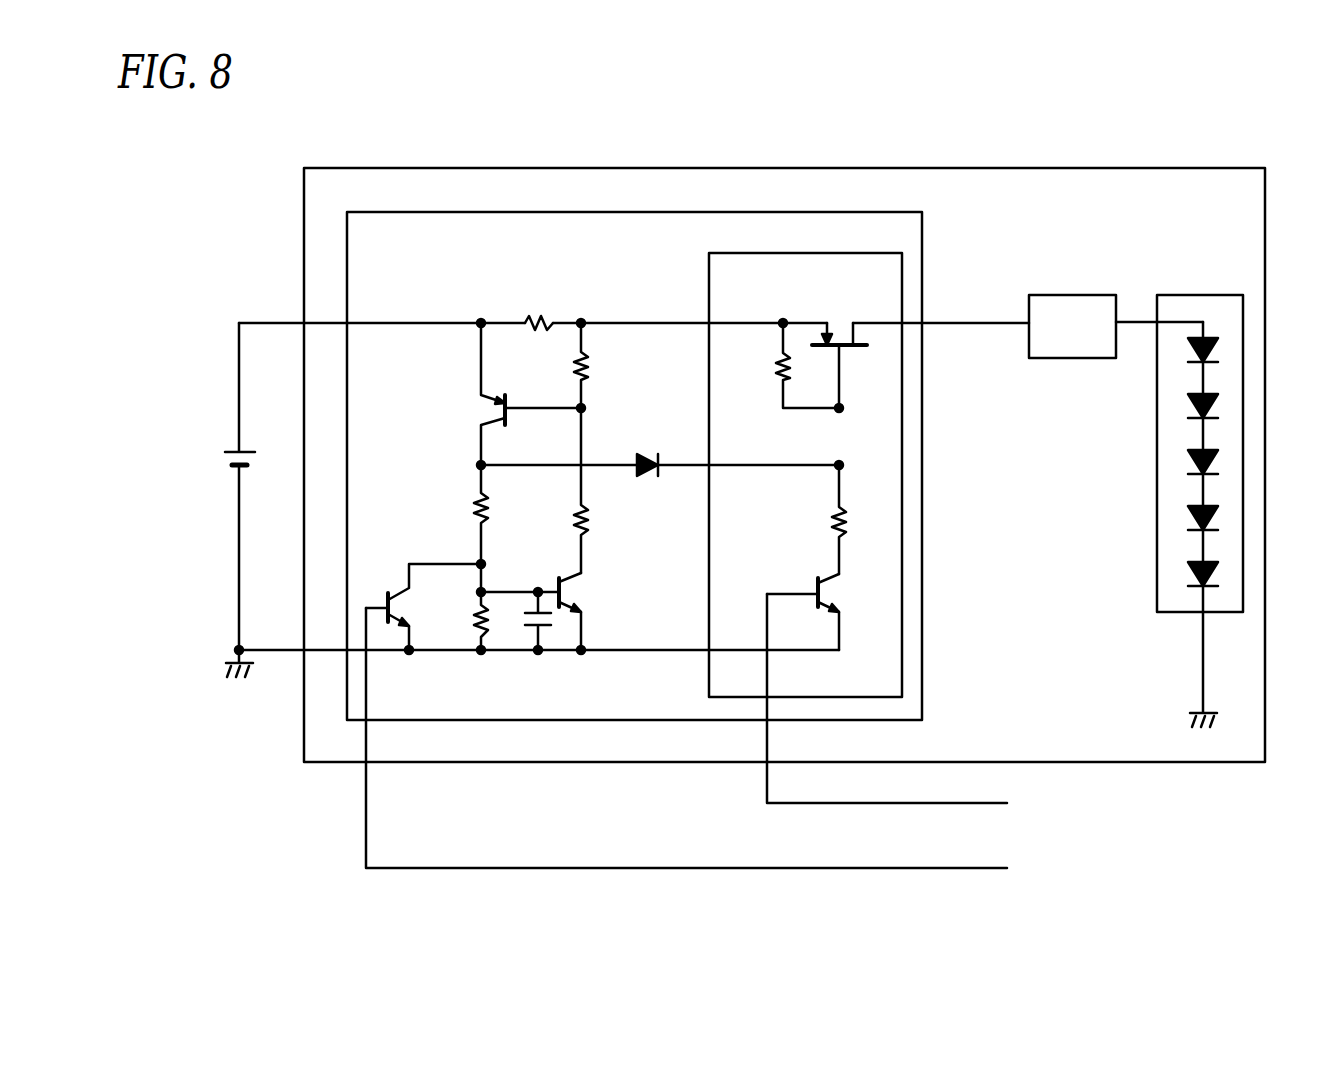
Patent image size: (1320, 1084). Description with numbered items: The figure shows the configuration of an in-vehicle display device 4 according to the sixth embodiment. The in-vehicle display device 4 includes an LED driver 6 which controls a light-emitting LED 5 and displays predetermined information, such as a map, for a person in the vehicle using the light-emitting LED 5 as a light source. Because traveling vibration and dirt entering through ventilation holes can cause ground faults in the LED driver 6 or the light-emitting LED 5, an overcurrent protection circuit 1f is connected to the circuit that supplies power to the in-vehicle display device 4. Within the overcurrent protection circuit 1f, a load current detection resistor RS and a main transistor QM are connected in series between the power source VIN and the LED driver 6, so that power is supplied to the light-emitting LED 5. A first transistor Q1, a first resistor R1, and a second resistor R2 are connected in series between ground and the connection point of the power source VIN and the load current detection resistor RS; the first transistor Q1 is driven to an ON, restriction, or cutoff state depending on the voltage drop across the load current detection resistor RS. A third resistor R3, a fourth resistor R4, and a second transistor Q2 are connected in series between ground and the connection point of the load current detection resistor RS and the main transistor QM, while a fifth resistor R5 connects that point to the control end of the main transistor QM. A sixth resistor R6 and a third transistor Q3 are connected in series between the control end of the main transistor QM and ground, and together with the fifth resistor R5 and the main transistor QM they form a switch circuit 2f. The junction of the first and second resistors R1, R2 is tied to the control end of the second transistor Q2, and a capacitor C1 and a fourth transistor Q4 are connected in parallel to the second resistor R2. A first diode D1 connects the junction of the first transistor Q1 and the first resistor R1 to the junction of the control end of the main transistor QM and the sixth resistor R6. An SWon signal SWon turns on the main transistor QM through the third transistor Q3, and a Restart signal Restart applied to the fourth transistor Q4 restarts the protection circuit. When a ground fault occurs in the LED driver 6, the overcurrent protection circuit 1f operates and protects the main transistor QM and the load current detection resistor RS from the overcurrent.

The in-vehicle display device 4 is at (784, 449).
The overcurrent protection circuit 1f is at (634, 451).
The switch circuit 2f is at (805, 460).
The light-emitting LED 5 is at (1200, 495).
The LED driver 6 is at (1072, 310).
The power source VIN is at (207, 500).
The load current detection resistor RS is at (531, 305).
The first resistor R1 is at (463, 516).
The second resistor R2 is at (462, 609).
The third resistor R3 is at (563, 367).
The fourth resistor R4 is at (603, 490).
The fifth resistor R5 is at (785, 365).
The sixth resistor R6 is at (860, 519).
The first transistor Q1 is at (505, 396).
The second transistor Q2 is at (596, 613).
The third transistor Q3 is at (828, 612).
The fourth transistor Q4 is at (423, 604).
The main transistor QM is at (839, 339).
The capacitor C1 is at (520, 621).
The first diode D1 is at (662, 482).
The SWon signal SWon is at (924, 706).
The Restart signal Restart is at (734, 747).